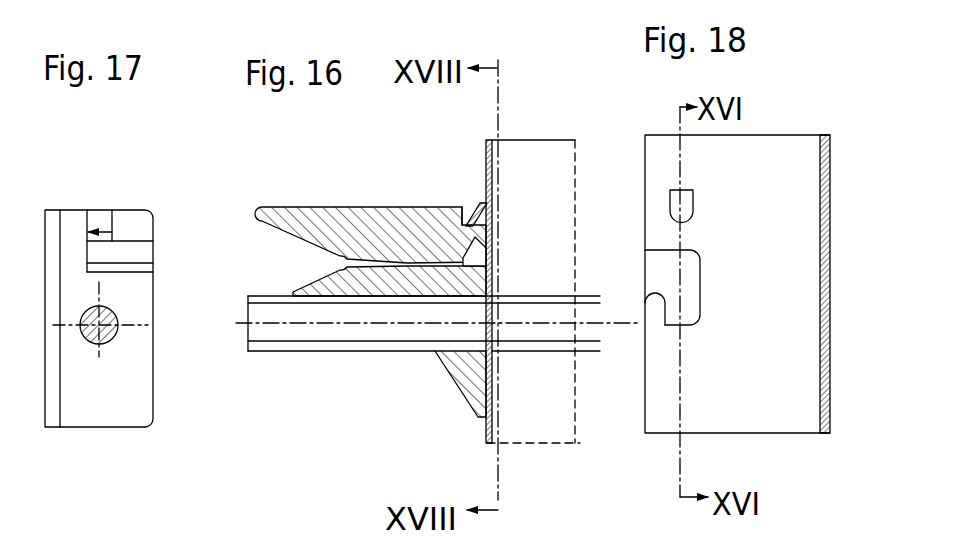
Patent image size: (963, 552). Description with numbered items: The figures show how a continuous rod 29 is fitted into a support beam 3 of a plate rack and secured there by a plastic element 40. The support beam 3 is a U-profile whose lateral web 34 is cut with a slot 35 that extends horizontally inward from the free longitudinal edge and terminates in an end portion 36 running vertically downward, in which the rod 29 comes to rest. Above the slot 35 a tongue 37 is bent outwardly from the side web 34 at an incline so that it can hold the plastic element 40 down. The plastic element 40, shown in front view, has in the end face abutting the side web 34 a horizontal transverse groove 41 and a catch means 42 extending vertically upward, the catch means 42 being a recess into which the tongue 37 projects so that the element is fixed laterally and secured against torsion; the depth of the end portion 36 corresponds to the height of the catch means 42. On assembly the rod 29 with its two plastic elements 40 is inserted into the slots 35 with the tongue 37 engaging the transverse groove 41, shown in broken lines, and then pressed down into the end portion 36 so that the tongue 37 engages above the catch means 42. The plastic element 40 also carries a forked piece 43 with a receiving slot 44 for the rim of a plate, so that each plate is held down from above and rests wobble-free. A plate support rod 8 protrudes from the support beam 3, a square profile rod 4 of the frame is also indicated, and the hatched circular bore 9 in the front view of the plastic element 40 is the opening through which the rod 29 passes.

In FIG. 18, the support beam 3 is at (815, 157).
In FIG. 16, the square profile rod 4 is at (480, 148).
In FIG. 16, the plate support rod 8 is at (285, 346).
In FIG. 17, the bore 9 is at (107, 340).
In FIG. 16, the continuous rod 29 is at (515, 332).
In FIG. 18, the lateral web 34 is at (743, 412).
In FIG. 16, the slot 35 is at (489, 281).
In FIG. 18, the slot 35 is at (660, 268).
In FIG. 18, the end portion 36 is at (668, 328).
In FIG. 16, the tongue 37 is at (473, 205).
In FIG. 18, the tongue 37 is at (688, 202).
In FIG. 17, the plastic element 40 is at (107, 392).
In FIG. 16, the plastic element 40 is at (443, 278).
In FIG. 17, the transverse groove 41 is at (118, 253).
In FIG. 16, the transverse groove 41 is at (488, 258).
In FIG. 17, the catch means 42 is at (95, 227).
In FIG. 16, the catch means 42 is at (470, 222).
In FIG. 16, the forked piece 43 is at (363, 252).
In FIG. 16, the receiving slot 44 is at (332, 280).